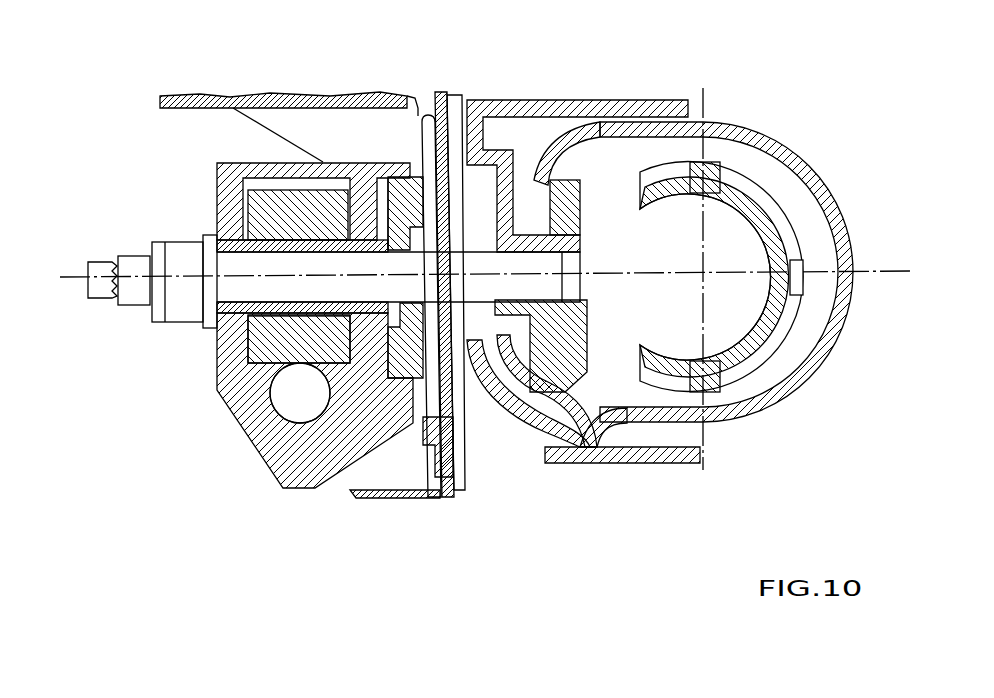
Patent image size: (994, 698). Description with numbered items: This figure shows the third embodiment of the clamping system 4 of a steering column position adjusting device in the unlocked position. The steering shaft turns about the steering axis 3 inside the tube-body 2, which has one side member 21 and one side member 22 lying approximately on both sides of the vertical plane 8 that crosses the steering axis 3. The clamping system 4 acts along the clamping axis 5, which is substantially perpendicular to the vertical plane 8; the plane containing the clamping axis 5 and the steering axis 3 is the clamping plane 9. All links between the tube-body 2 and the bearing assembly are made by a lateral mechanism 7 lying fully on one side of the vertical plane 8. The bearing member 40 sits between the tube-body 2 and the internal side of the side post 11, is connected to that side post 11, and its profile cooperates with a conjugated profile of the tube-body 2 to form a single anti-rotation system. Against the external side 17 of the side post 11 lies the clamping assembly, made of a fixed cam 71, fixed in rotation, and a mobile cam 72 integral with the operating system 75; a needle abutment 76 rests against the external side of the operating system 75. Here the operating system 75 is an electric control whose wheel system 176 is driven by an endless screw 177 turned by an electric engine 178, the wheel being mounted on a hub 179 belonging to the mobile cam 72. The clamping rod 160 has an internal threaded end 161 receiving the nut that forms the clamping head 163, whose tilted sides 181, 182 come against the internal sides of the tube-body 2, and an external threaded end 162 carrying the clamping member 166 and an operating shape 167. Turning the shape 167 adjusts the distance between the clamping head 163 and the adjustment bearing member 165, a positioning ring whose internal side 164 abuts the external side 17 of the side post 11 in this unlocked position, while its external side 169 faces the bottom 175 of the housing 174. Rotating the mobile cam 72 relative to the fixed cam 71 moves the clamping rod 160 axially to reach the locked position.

The tube-body 2 is at (781, 126).
The steering axis 3 is at (706, 278).
The clamping system 4 is at (93, 225).
The clamping axis 5 is at (70, 276).
The lateral mechanism 7 is at (588, 80).
The vertical plane 8 is at (706, 96).
The clamping plane 9 is at (866, 272).
The side post 11 is at (440, 476).
The external side 17 is at (413, 478).
The side member 21 is at (690, 425).
The side member 22 is at (822, 366).
The bearing member 40 is at (546, 94).
The fixed cam 71 is at (388, 470).
The mobile cam 72 is at (344, 492).
The operating system 75 is at (188, 158).
The needle abutment 76 is at (210, 245).
The clamping rod 160 is at (234, 290).
The internal threaded end 161 is at (578, 266).
The external threaded end 162 is at (100, 294).
The clamping head 163 is at (573, 328).
The internal side 164 is at (490, 185).
The adjustment bearing member 165 is at (423, 222).
The clamping member 166 is at (173, 240).
The operating shape 167 is at (133, 272).
The external side 169 is at (405, 236).
The housing 174 is at (400, 226).
The bottom 175 is at (470, 432).
The wheel system 176 is at (256, 362).
The endless screw 177 is at (292, 397).
The electric engine 178 is at (283, 462).
The hub 179 is at (283, 308).
The tilted side 181 is at (568, 398).
The tilted side 182 is at (533, 416).